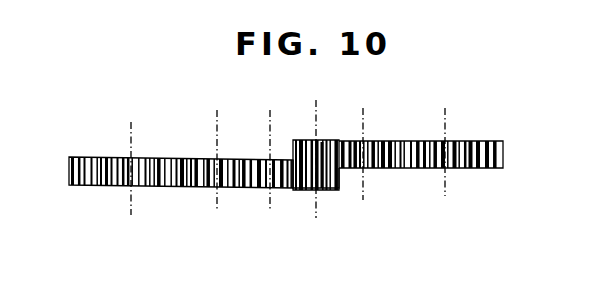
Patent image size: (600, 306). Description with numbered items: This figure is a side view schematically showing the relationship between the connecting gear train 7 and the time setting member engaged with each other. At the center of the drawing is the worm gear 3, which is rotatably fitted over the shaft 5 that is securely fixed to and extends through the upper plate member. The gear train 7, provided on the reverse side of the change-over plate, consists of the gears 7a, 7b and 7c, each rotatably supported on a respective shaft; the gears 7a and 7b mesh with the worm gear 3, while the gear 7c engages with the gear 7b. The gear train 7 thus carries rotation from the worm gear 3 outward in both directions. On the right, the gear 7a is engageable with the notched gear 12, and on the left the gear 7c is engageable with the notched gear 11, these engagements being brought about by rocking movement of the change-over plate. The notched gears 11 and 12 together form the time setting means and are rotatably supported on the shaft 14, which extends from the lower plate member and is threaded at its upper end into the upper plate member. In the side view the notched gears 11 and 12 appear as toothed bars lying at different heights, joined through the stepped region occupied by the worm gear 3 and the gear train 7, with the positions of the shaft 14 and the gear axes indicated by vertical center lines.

The notched gear 11 is at (107, 186).
The notched gear 12 is at (472, 142).
The worm gear 3 is at (328, 140).
The shaft 5 is at (321, 140).
The gear train 7 is at (334, 197).
The gear 7a is at (375, 141).
The gear 7b is at (267, 160).
The gear 7c is at (209, 158).
The shaft 14 is at (136, 132).